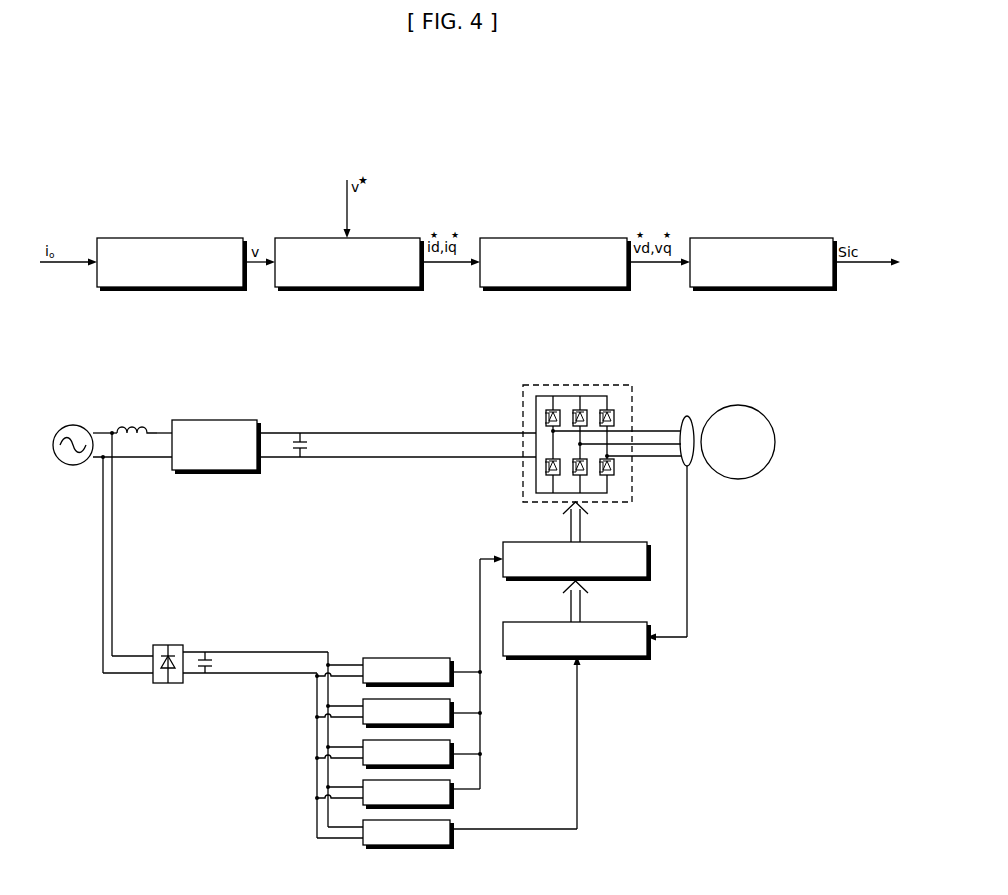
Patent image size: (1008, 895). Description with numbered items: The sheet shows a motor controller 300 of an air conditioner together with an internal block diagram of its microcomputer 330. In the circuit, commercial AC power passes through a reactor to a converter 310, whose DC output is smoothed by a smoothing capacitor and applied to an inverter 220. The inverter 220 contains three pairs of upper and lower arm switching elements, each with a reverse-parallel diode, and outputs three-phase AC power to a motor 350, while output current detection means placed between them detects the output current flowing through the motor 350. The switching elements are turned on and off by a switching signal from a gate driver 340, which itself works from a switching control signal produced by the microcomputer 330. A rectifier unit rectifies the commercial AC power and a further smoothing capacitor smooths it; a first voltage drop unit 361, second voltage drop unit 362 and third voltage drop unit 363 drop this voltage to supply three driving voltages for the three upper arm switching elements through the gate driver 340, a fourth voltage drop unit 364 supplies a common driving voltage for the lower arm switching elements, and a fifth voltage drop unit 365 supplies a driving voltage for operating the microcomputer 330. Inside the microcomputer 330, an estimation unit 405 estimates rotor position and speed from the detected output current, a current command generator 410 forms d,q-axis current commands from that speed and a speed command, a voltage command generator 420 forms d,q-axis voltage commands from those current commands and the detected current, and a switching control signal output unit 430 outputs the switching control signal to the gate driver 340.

In FIG. 4, the estimation unit 405 is at (210, 238).
In FIG. 4, the current command generator 410 is at (389, 238).
In FIG. 4, the voltage command generator 420 is at (593, 238).
In FIG. 4, the switching control signal output unit 430 is at (800, 238).
In FIG. 3, the motor controller 300 is at (223, 354).
In FIG. 3, the converter 310 is at (240, 420).
In FIG. 3, the inverter 220 is at (605, 385).
In FIG. 3, the motor 350 is at (750, 407).
In FIG. 3, the gate driver 340 is at (640, 542).
In FIG. 3, the microcomputer 330 is at (640, 622).
In FIG. 3, the first voltage drop unit 361 is at (363, 681).
In FIG. 3, the second voltage drop unit 362 is at (363, 722).
In FIG. 3, the third voltage drop unit 363 is at (363, 763).
In FIG. 3, the fourth voltage drop unit 364 is at (363, 803).
In FIG. 3, the fifth voltage drop unit 365 is at (363, 843).